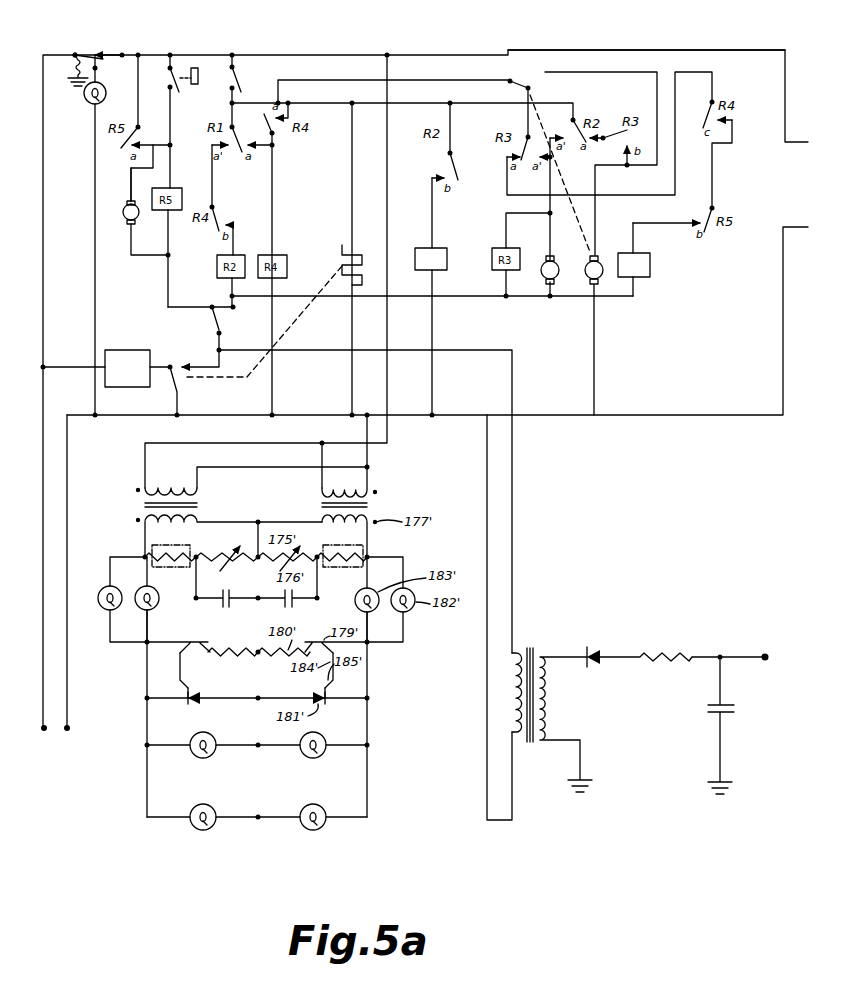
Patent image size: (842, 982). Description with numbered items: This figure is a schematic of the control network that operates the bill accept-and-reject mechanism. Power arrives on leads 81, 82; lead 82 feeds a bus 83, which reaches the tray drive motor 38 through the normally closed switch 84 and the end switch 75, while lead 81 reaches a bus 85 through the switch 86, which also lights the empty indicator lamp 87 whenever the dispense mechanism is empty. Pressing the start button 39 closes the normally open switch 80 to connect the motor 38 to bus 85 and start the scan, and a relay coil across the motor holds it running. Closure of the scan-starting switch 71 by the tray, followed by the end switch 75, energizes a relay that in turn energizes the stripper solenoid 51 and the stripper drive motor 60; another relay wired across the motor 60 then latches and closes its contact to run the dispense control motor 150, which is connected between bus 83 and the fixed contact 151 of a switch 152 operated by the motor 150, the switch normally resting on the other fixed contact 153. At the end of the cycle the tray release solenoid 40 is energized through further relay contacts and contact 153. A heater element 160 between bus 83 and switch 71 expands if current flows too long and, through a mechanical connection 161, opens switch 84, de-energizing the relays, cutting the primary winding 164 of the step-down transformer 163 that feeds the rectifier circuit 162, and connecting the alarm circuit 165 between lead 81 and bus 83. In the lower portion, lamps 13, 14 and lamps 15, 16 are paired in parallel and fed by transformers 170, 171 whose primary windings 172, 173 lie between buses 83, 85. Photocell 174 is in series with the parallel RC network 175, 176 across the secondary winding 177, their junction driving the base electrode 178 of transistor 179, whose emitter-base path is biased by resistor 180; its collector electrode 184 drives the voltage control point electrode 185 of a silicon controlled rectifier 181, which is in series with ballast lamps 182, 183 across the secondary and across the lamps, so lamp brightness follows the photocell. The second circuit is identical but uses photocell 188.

The lamp 13 is at (202, 830).
The lamp 14 is at (198, 758).
The lamp 15 is at (310, 830).
The lamp 16 is at (326, 750).
The motor 38 is at (126, 209).
The start button 39 is at (194, 66).
The tray release solenoid 40 is at (652, 264).
The stripper solenoid 51 is at (440, 246).
The stripper drive motor 60 is at (562, 288).
The scan-starting switch 71 is at (230, 84).
The end switch 75 is at (225, 316).
The normally open switch 80 is at (168, 80).
The power supply lead 81 is at (44, 720).
The power supply lead 82 is at (68, 722).
The bus 83 is at (206, 413).
The normally closed switch 84 is at (178, 378).
The bus 85 is at (104, 52).
The switch 86 is at (82, 52).
The empty indicator lamp 87 is at (89, 104).
The dispense control motor 150 is at (606, 288).
The fixed contact 151 is at (554, 50).
The switch 152 is at (530, 74).
The fixed contact 153 is at (532, 80).
The heater element 160 is at (342, 248).
The mechanical connection 161 is at (296, 310).
The rectifier circuit 162 is at (678, 715).
The step-down transformer 163 is at (538, 650).
The primary winding 164 is at (512, 692).
The alarm circuit 165 is at (134, 350).
The transformer 170 is at (142, 505).
The transformer 171 is at (380, 506).
The primary winding 172 is at (184, 484).
The primary winding 173 is at (360, 486).
The photocell 174 is at (155, 546).
The resistor of RC network 175 is at (234, 556).
The capacitor of RC network 176 is at (236, 584).
The secondary winding 177 is at (192, 522).
The base electrode 178 is at (176, 614).
The transistor 179 is at (188, 640).
The bias resistor 180 is at (252, 650).
The silicon controlled rectifier 181 is at (198, 704).
The ballast lamp 182 is at (100, 610).
The ballast lamp 183 is at (138, 610).
The collector electrode 184 is at (178, 660).
The voltage control point electrode 185 is at (190, 680).
The photocell 188 is at (362, 546).